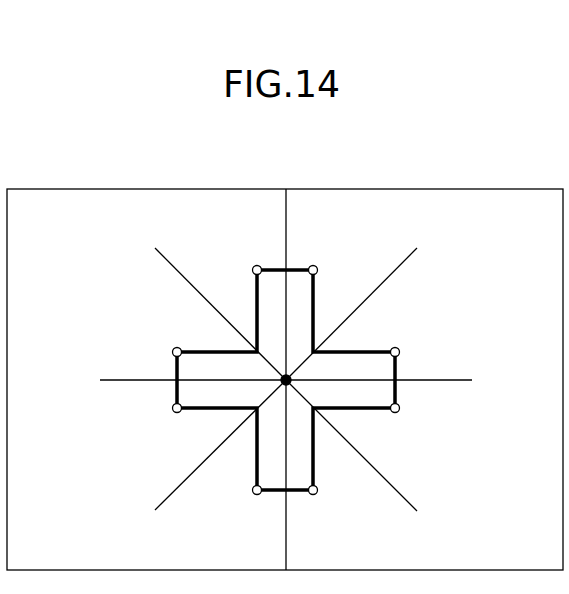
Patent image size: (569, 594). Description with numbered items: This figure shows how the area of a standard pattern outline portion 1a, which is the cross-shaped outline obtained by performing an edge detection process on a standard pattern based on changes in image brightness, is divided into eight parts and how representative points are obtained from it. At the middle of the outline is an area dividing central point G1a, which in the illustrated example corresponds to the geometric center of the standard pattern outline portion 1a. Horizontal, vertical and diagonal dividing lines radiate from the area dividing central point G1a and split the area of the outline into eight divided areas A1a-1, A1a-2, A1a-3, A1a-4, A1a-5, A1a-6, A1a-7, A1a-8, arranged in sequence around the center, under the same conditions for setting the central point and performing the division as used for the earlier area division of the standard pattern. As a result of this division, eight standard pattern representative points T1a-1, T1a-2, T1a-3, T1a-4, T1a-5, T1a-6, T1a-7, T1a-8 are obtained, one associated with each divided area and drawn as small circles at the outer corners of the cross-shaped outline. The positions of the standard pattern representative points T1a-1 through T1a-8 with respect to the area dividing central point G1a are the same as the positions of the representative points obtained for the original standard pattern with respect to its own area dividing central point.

The standard pattern outline portion 1a is at (298, 268).
The area dividing central point G1a is at (286, 380).
The divided area A1a-1 is at (342, 284).
The divided area A1a-2 is at (398, 314).
The divided area A1a-3 is at (398, 426).
The divided area A1a-4 is at (351, 473).
The divided area A1a-5 is at (238, 475).
The divided area A1a-6 is at (185, 445).
The divided area A1a-7 is at (184, 333).
The divided area A1a-8 is at (220, 290).
The standard pattern representative point T1a-1 is at (317, 266).
The standard pattern representative point T1a-2 is at (400, 350).
The standard pattern representative point T1a-3 is at (400, 411).
The standard pattern representative point T1a-4 is at (317, 494).
The standard pattern representative point T1a-5 is at (253, 495).
The standard pattern representative point T1a-6 is at (172, 411).
The standard pattern representative point T1a-7 is at (172, 350).
The standard pattern representative point T1a-8 is at (253, 266).